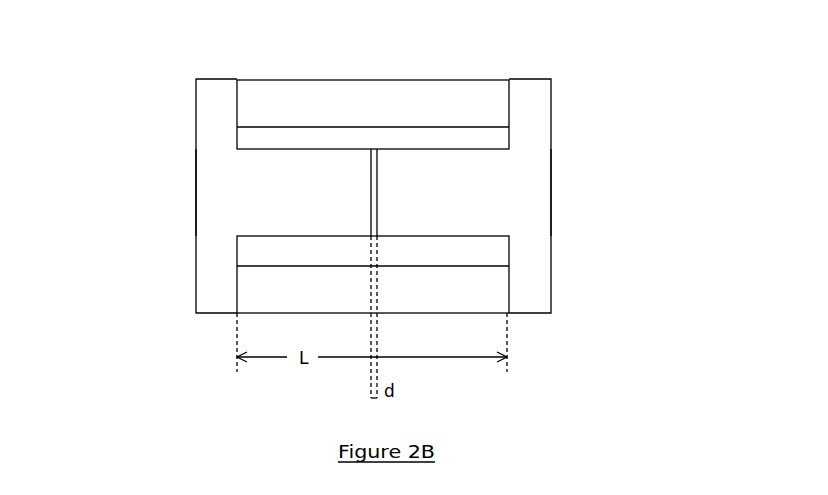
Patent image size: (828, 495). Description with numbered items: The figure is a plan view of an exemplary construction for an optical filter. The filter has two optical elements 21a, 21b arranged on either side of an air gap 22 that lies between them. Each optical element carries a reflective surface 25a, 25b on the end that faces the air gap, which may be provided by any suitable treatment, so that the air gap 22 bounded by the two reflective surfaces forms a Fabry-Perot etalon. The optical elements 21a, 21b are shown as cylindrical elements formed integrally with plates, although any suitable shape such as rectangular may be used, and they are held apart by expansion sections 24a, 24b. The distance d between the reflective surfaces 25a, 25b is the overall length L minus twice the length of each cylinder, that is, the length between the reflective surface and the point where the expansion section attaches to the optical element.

The optical element 21a is at (196, 142).
The optical element 21b is at (551, 140).
The air gap 22 is at (372, 165).
The expansion section 24a is at (433, 81).
The expansion section 24b is at (430, 313).
The reflective surface 25a is at (371, 192).
The reflective surface 25b is at (377, 191).